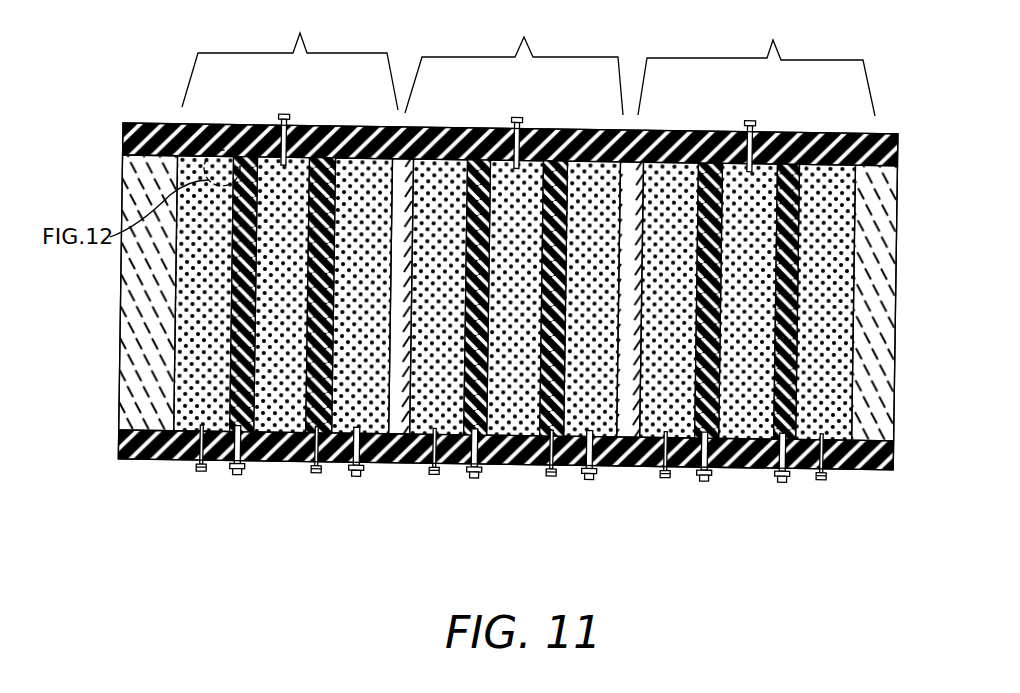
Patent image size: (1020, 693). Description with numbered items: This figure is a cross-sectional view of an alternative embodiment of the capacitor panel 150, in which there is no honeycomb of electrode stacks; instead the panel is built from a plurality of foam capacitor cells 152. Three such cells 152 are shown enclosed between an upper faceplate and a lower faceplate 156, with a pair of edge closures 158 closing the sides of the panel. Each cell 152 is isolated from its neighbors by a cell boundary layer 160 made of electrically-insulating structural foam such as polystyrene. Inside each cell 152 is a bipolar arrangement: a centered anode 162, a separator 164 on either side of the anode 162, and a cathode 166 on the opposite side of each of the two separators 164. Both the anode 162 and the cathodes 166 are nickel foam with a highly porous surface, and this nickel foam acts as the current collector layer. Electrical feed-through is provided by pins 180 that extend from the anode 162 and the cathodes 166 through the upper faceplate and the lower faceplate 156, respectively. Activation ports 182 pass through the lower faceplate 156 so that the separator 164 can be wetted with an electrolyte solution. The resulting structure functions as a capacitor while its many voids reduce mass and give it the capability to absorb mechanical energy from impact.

The capacitor panel 150 is at (211, 556).
The capacitor cell 152 is at (528, 59).
The lower faceplate 156 is at (686, 470).
The edge closure 158 is at (128, 378).
The cell boundary layer 160 is at (398, 430).
The anode 162 is at (289, 432).
The separator 164 is at (216, 424).
The cathode 166 is at (197, 460).
The pin 180 is at (750, 118).
The activation port 182 is at (784, 477).